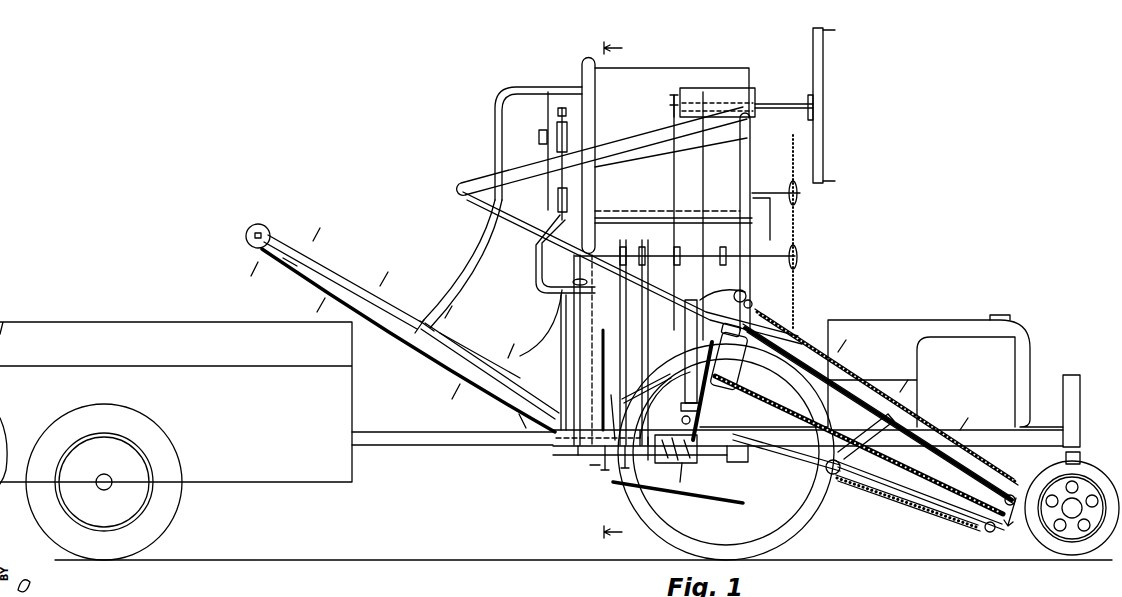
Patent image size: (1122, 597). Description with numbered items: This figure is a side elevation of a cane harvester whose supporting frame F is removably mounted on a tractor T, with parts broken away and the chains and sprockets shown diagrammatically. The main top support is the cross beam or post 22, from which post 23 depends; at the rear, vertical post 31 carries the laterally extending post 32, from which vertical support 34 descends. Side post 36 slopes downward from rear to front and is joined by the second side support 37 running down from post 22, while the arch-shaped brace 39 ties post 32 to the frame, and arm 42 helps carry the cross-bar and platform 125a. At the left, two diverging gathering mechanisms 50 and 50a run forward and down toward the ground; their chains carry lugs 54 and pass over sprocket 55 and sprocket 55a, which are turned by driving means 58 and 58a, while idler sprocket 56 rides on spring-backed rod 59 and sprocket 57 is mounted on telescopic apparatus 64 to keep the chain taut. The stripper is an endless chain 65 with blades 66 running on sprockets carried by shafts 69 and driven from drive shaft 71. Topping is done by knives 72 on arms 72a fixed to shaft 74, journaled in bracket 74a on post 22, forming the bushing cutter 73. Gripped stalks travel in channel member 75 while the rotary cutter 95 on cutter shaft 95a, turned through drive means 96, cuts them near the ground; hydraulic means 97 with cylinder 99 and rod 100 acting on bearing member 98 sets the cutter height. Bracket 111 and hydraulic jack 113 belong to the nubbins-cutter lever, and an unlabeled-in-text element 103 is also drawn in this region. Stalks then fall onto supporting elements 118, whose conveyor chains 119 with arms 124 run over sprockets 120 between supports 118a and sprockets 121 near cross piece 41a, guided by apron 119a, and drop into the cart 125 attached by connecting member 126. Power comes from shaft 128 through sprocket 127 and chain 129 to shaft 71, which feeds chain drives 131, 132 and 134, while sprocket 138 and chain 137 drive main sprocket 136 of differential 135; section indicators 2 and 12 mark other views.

The section line 2 is at (1015, 520).
The section line 12 is at (622, 291).
The cross beam or post 22 is at (740, 122).
The post 23 is at (755, 175).
The vertical post 31 is at (686, 361).
The laterally extending post or beam 32 is at (598, 80).
The vertical support 34 is at (598, 134).
The side post 36 is at (621, 267).
The second side support 37 is at (620, 140).
The brace 39 is at (531, 87).
The cross piece 41a is at (557, 440).
The arm 42 is at (470, 348).
The gathering mechanism 50 is at (802, 459).
The gathering mechanism 50a is at (900, 412).
The projections or lugs 54 is at (886, 506).
The sprocket 55 is at (749, 376).
The sprocket 55a is at (712, 283).
The idler sprocket 56 is at (1002, 528).
The sprocket 57 is at (836, 488).
The driving means 58 is at (748, 360).
The driving means 58a is at (790, 278).
The rod 59 is at (976, 525).
The apparatus 64 is at (850, 468).
The endless chain or belt 65 is at (800, 231).
The rigid elements or blades 66 is at (790, 150).
The shaft 69 is at (770, 203).
The drive shaft 71 is at (704, 250).
The knives 72 is at (835, 184).
The arms 72a is at (823, 166).
The bushing cutter 73 is at (823, 106).
The shaft 74 is at (768, 112).
The bracket 74a is at (740, 94).
The channel member 75 is at (522, 278).
The rotary disk-like cutter 95 is at (700, 526).
The cutter shaft 95a is at (697, 490).
The drive means 96 is at (705, 460).
The hydraulic means 97 is at (683, 405).
The bearing member 98 is at (682, 421).
The cylinder 99 is at (674, 367).
The rod 100 is at (700, 416).
The bar 103 is at (598, 348).
The support or bracket 111 is at (544, 116).
The hydraulic jack 113 is at (557, 195).
The supporting elements 118 is at (338, 268).
The supports 118a is at (289, 272).
The conveyor chains 119 is at (312, 282).
The apron 119a is at (526, 334).
The sprockets 120 is at (266, 230).
The sprockets 121 is at (580, 449).
The arms 124 is at (382, 282).
The cane collecting cart or wagon 125 is at (260, 424).
The platform 125a is at (480, 392).
The connecting member 126 is at (410, 440).
The sprocket 127 is at (612, 481).
The shaft 128 is at (605, 463).
The chain 129 is at (641, 330).
The sprocket and chain drive 131 is at (645, 301).
The sprocket and chain drive 132 is at (671, 170).
The chain drive 134 is at (706, 166).
The power transmitting differential 135 is at (560, 354).
The main drive sprocket 136 is at (600, 333).
The chain 137 is at (618, 409).
The sprocket 138 is at (592, 470).
The tractor T is at (890, 342).
The supporting frame F is at (608, 108).